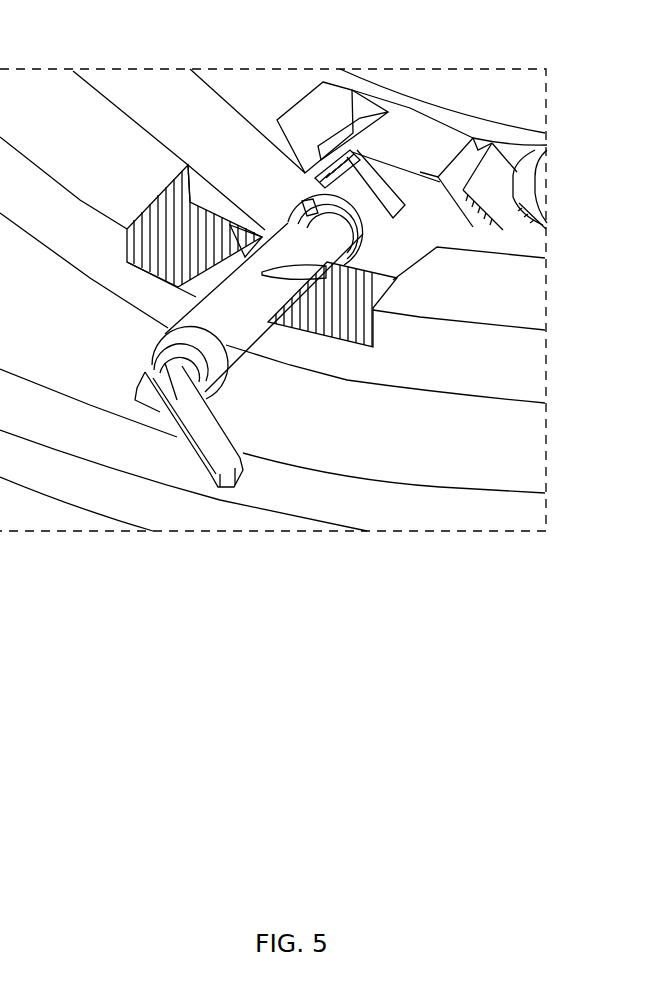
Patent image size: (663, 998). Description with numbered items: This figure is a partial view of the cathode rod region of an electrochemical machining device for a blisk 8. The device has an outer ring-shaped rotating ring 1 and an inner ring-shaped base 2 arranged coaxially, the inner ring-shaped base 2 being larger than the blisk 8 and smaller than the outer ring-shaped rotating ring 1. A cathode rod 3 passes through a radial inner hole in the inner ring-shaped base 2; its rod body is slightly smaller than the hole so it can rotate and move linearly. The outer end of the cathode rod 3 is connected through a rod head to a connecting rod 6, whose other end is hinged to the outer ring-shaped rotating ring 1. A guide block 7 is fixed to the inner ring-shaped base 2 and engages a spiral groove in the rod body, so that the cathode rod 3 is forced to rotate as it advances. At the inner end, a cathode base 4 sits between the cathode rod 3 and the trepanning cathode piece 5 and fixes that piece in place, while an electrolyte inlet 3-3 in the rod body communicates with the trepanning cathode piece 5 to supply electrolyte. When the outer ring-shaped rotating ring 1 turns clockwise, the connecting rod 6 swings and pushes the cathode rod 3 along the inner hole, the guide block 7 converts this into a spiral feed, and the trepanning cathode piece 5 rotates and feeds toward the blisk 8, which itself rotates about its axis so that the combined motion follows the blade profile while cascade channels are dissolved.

The outer ring-shaped rotating ring 1 is at (523, 515).
The inner ring-shaped base 2 is at (528, 307).
The cathode rod 3 is at (290, 248).
The electrolyte inlet 3-3 is at (306, 201).
The cathode base 4 is at (345, 183).
The trepanning cathode piece 5 is at (373, 182).
The connecting rod 6 is at (157, 353).
The guide block 7 is at (188, 165).
The blisk 8 is at (532, 138).